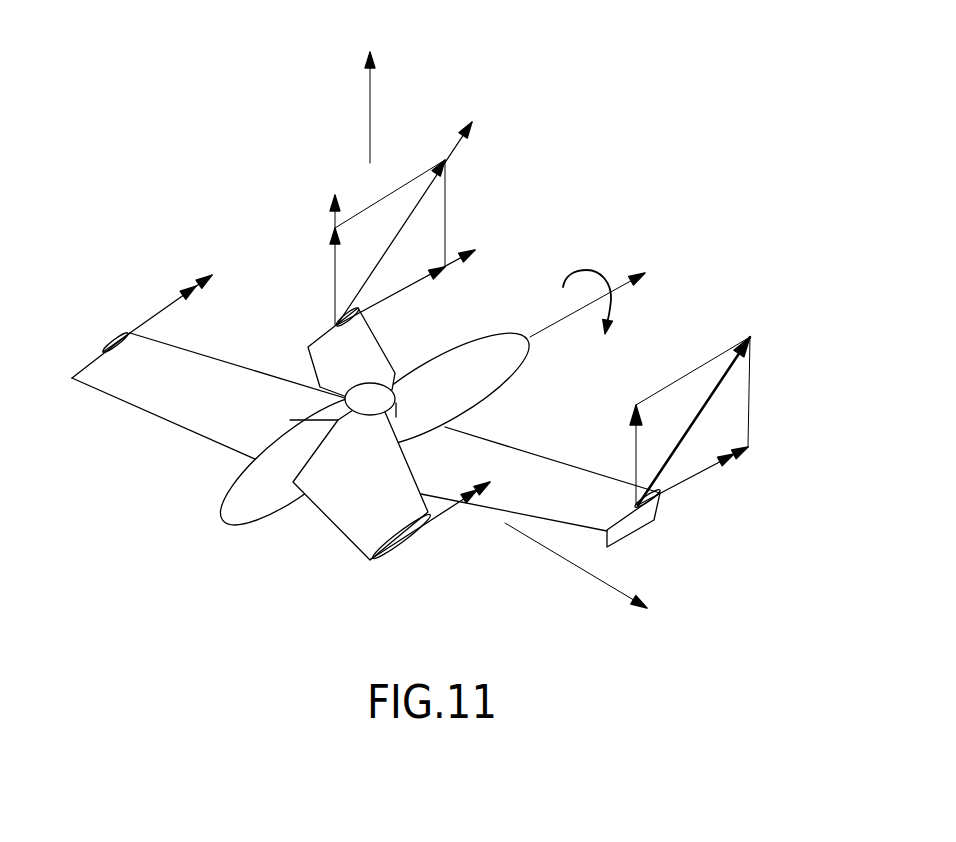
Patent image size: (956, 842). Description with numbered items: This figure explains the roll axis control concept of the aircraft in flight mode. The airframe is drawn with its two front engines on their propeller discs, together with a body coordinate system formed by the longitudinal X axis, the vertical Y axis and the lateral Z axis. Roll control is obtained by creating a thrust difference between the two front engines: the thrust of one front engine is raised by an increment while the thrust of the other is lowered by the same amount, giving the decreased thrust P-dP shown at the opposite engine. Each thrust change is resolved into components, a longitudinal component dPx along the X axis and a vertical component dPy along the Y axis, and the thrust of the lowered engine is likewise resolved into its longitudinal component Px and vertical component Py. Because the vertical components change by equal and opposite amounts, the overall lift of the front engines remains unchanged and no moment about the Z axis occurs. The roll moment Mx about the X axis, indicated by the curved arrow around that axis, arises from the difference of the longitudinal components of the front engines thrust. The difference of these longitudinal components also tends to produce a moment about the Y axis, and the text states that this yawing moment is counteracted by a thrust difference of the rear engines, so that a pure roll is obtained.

The X axis X is at (595, 305).
The Y axis Y is at (384, 107).
The Z axis Z is at (579, 581).
The roll moment Mx is at (588, 288).
The decreased front engine thrust P-dP is at (485, 529).
The longitudinal component of thrust increment dPx is at (502, 254).
The vertical component of thrust increment dPy is at (318, 182).
The longitudinal thrust component Px is at (773, 452).
The vertical thrust component Py is at (623, 383).